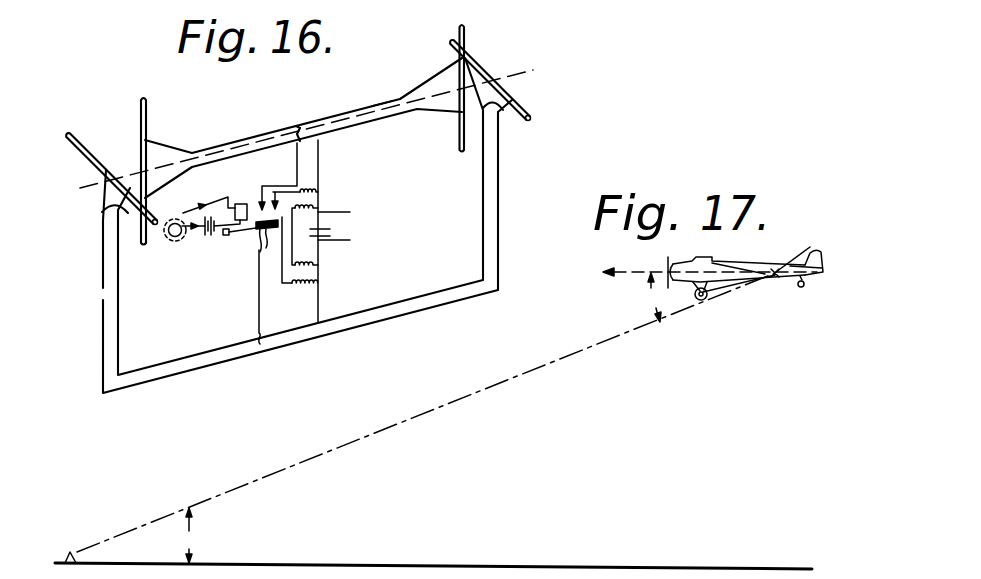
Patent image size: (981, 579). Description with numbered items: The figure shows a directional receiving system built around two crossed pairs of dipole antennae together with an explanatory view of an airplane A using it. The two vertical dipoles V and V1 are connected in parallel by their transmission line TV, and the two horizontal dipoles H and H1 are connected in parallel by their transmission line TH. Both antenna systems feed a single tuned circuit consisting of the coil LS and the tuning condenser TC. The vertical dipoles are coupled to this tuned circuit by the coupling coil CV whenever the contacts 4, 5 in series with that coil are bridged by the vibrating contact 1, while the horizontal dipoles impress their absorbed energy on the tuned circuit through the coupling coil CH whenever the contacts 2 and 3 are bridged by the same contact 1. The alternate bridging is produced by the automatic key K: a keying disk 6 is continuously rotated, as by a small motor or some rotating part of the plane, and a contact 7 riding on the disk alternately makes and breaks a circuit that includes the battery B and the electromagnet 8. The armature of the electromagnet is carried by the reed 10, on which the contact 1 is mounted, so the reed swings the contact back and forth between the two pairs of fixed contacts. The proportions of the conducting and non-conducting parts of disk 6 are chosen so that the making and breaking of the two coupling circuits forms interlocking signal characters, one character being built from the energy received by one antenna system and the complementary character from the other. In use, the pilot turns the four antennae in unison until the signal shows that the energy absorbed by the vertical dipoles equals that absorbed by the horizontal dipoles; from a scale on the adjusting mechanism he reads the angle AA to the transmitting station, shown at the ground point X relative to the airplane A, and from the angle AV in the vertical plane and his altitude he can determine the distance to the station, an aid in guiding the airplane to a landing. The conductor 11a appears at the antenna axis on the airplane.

In FIG. 16, the transmission line TH is at (96, 200).
In FIG. 16, the transmission line TV is at (260, 137).
In FIG. 16, the antenna conductor 11a is at (382, 101).
In FIG. 17, the antenna conductor 11a is at (806, 253).
In FIG. 16, the vertical dipole V1 is at (146, 135).
In FIG. 16, the vertical dipole V is at (466, 38).
In FIG. 17, the vertical dipole V is at (777, 277).
In FIG. 16, the horizontal dipole H1 is at (84, 152).
In FIG. 16, the horizontal dipole H is at (507, 94).
In FIG. 17, the horizontal dipole H is at (776, 270).
In FIG. 16, the automatic key K is at (191, 283).
In FIG. 16, the keying disk 6 is at (169, 241).
In FIG. 16, the battery B is at (207, 238).
In FIG. 16, the electromagnet 8 is at (237, 204).
In FIG. 16, the contact 7 is at (183, 212).
In FIG. 16, the reed 10 is at (227, 237).
In FIG. 16, the contact 1 is at (258, 255).
In FIG. 16, the contact 2 is at (264, 266).
In FIG. 16, the contact 3 is at (280, 238).
In FIG. 16, the contact 4 is at (258, 220).
In FIG. 16, the contact 5 is at (276, 199).
In FIG. 16, the coupling coil CV is at (320, 192).
In FIG. 16, the tuned circuit coil LS is at (314, 207).
In FIG. 16, the tuning condenser TC is at (335, 228).
In FIG. 16, the coupling coil CH is at (320, 283).
In FIG. 17, the airplane A is at (740, 264).
In FIG. 17, the angle AA is at (649, 297).
In FIG. 17, the vertical angle AV is at (182, 535).
In FIG. 17, the ground station X is at (71, 552).